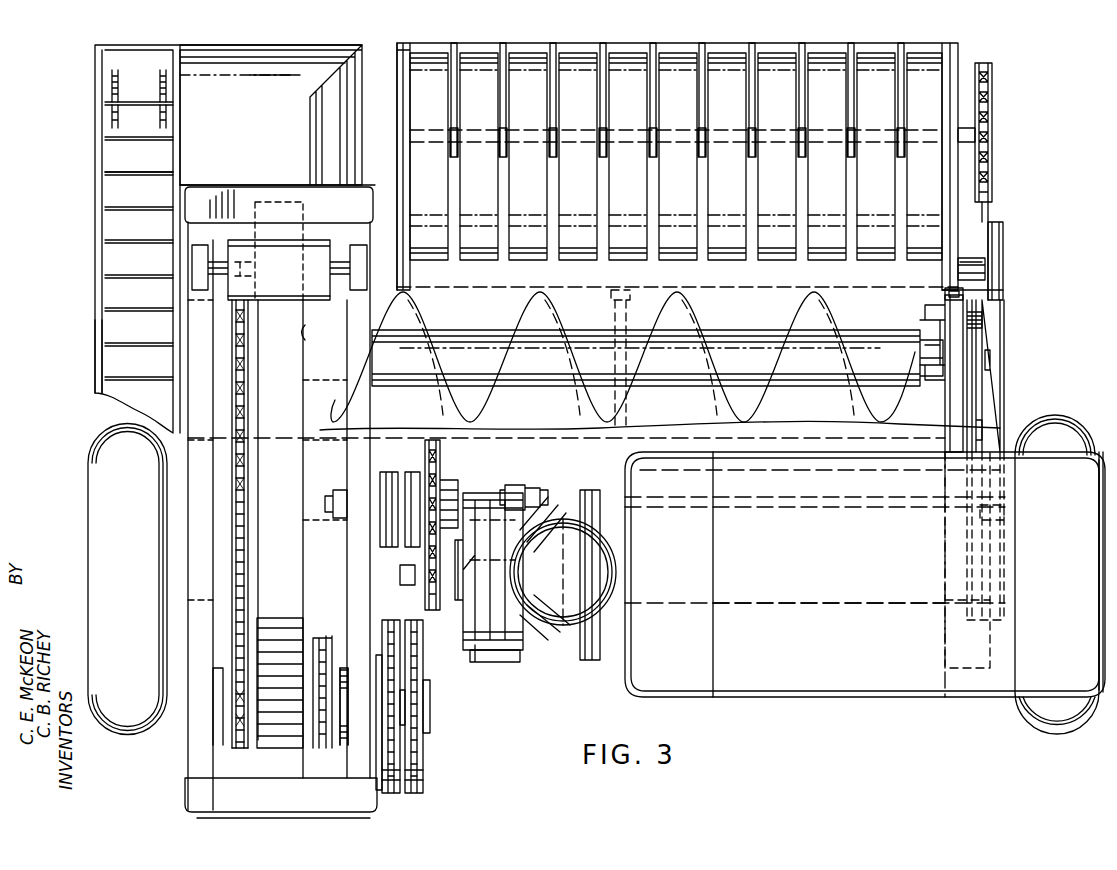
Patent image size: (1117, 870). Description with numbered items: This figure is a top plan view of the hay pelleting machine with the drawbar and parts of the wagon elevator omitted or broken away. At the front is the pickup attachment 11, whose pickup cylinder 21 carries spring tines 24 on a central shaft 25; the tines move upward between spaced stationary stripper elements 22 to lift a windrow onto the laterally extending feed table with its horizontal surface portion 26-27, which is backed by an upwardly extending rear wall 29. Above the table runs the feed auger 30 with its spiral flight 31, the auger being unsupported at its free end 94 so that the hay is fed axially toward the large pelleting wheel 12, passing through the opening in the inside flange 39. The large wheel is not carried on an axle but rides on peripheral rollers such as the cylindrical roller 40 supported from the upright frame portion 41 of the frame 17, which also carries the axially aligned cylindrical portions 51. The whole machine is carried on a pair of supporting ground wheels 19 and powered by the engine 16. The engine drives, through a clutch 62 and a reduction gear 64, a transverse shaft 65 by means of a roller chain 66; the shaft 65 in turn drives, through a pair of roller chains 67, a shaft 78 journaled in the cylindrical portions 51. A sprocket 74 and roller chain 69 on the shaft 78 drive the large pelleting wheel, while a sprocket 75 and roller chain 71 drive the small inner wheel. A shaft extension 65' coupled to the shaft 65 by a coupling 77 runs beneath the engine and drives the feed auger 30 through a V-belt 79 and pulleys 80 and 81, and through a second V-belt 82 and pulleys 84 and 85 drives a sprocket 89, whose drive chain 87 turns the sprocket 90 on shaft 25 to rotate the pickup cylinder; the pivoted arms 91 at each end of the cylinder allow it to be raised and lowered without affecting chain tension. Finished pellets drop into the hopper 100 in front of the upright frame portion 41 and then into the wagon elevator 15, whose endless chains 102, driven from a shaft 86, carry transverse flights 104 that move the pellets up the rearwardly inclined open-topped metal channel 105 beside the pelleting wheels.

The pickup attachment 11 is at (1012, 275).
The large pelleting wheel 12 is at (278, 501).
The wagon elevator 15 is at (80, 305).
The engine 16 is at (865, 574).
The frame 17 is at (880, 605).
The supporting ground wheels 19 is at (100, 450).
The pickup cylinder 21 is at (968, 68).
The stripper elements 22 is at (942, 62).
The spring tines 24 is at (798, 44).
The central shaft 25 is at (966, 128).
The feed table and horizontal surface portion 26-27 is at (945, 268).
The rear wall 29 is at (885, 440).
The feed auger 30 is at (735, 338).
The spiral flight 31 is at (695, 312).
The inside flange 39 is at (293, 500).
The cylindrical roller 40 is at (290, 300).
The upright frame portion 41 is at (215, 190).
The cylindrical portions 51 is at (432, 716).
The clutch 62 is at (560, 650).
The reduction gear 64 is at (495, 660).
The shaft 65 is at (434, 503).
The shaft extension 65' is at (545, 547).
The roller chain 66 is at (440, 598).
The roller chains 67 is at (413, 648).
The roller chain 69 is at (242, 612).
The roller chain 71 is at (332, 648).
The sprocket 74 is at (242, 750).
The sprocket 75 is at (305, 752).
The coupling 77 is at (512, 485).
The shaft 78 is at (330, 722).
The V-belt 79 is at (972, 418).
The pulley 80 is at (1005, 545).
The pulley 81 is at (980, 326).
The second V-belt 82 is at (1002, 358).
The pulley 84 is at (971, 598).
The pulley 85 is at (1002, 262).
The shaft 86 is at (378, 262).
The drive chain 87 is at (988, 210).
The sprocket 89 is at (988, 286).
The sprocket 90 is at (990, 160).
The arms 91 is at (396, 170).
The free end of auger 94 is at (306, 330).
The hopper 100 is at (340, 118).
The endless chains 102 is at (112, 88).
The flights 104 is at (120, 180).
The metal channel 105 is at (95, 349).